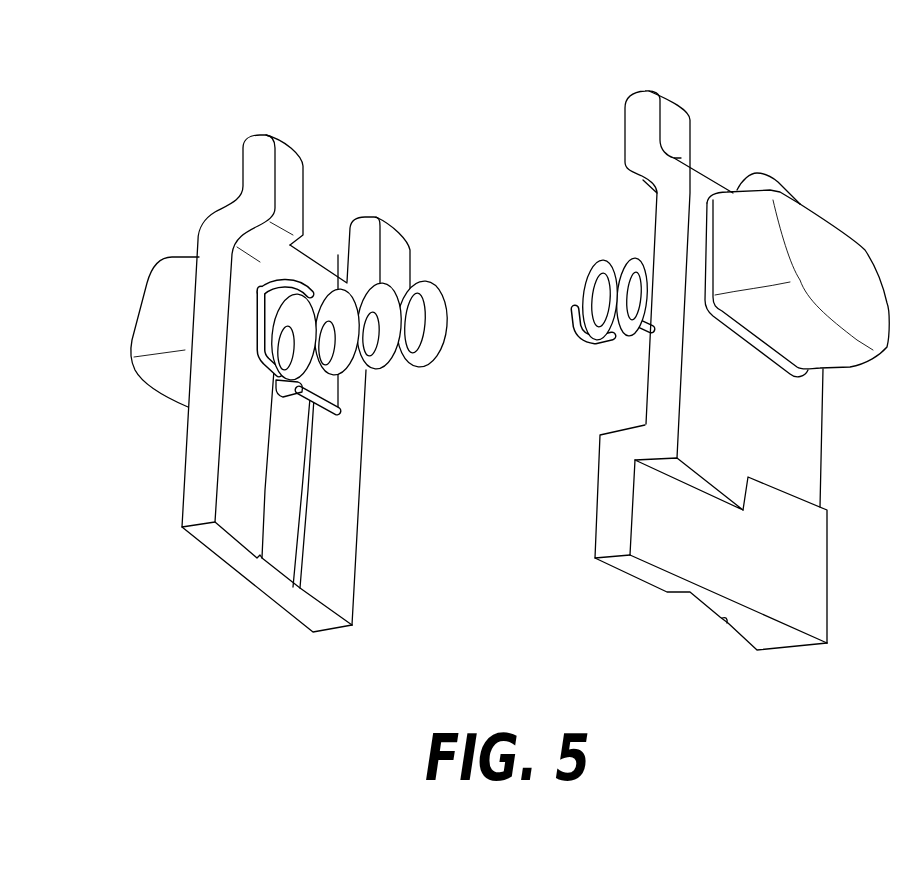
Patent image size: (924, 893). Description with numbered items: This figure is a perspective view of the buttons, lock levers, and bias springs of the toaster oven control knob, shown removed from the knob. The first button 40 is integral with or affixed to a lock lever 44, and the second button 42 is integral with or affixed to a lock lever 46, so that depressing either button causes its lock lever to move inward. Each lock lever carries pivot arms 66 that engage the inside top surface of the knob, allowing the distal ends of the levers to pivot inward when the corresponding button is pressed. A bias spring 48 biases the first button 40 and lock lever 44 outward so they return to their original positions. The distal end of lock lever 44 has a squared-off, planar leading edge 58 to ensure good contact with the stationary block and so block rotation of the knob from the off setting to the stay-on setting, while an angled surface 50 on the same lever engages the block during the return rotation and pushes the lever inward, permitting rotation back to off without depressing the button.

The first button 40 is at (863, 290).
The second button 42 is at (156, 309).
The lock lever 44 is at (674, 158).
The lock lever 46 is at (213, 218).
The bias spring 48 is at (426, 284).
The angled surface 50 is at (664, 556).
The leading edge 58 is at (830, 585).
The pivot arms 66 is at (248, 144).